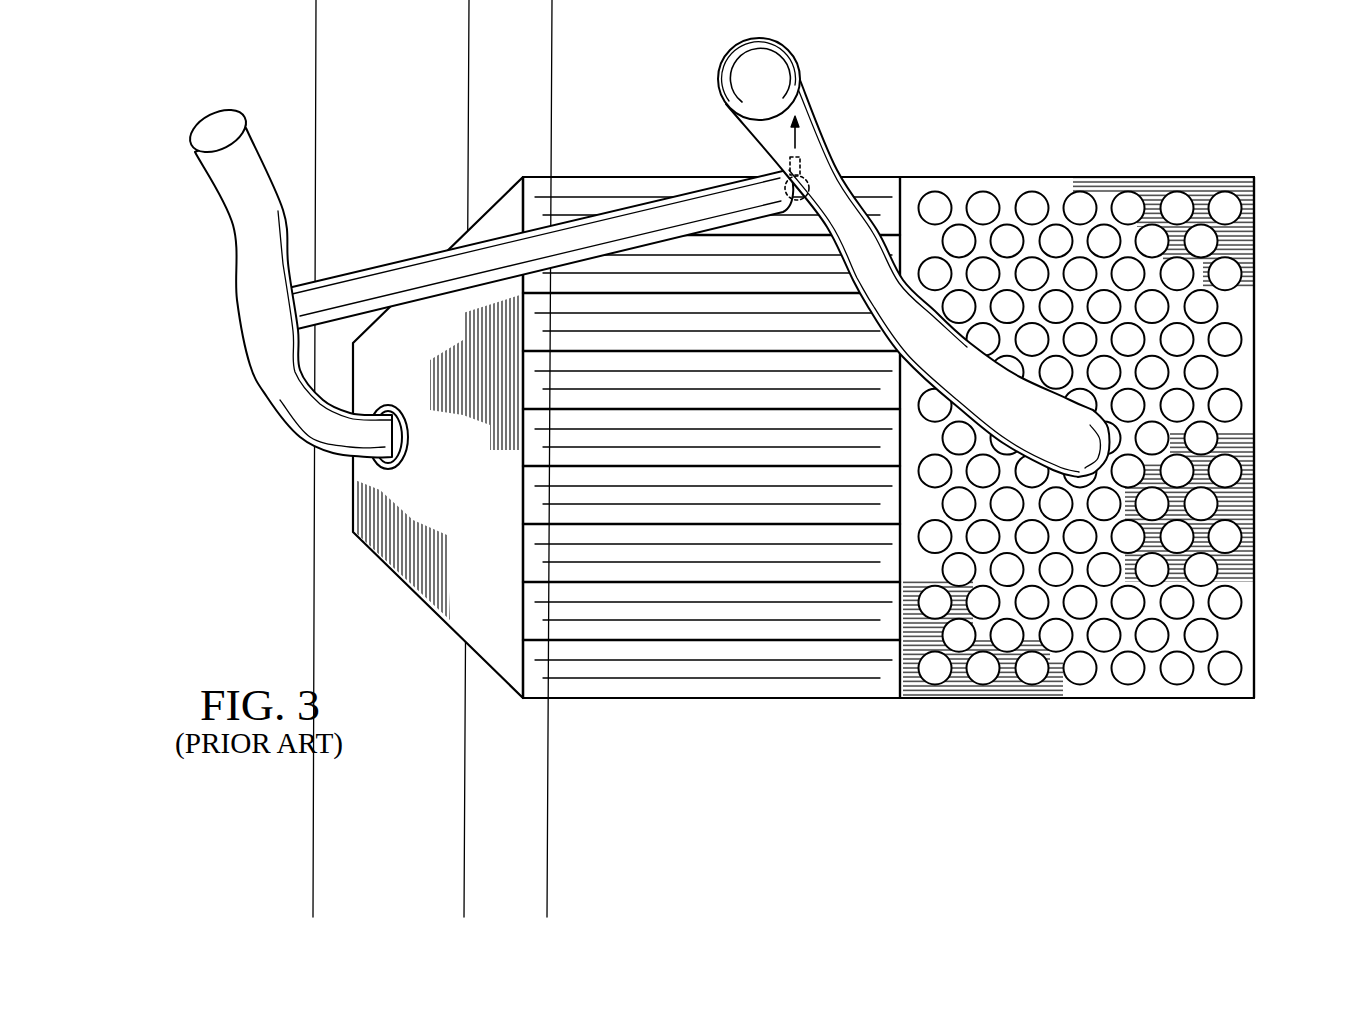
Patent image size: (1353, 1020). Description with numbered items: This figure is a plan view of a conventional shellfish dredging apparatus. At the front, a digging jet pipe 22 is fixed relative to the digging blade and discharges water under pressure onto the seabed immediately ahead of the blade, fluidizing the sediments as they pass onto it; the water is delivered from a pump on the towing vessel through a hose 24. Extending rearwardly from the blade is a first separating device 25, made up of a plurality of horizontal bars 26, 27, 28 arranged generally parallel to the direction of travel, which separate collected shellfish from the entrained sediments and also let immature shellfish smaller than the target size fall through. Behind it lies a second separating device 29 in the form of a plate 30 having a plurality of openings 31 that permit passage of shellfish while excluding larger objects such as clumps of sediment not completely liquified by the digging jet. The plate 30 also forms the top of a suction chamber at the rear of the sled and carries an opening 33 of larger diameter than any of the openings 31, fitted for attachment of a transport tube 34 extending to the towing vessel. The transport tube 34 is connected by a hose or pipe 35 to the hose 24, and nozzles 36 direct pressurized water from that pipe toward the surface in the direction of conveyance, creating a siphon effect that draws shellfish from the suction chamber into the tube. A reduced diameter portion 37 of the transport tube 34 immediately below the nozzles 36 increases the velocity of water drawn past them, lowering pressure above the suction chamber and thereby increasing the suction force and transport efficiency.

The digging jet pipe 22 is at (388, 405).
The hose 24 is at (252, 167).
The first separating device 25 is at (810, 668).
The horizontal bar 26 is at (578, 587).
The horizontal bar 27 is at (667, 603).
The horizontal bar 28 is at (738, 623).
The second separating device 29 is at (1344, 432).
The plate 30 is at (1235, 628).
The openings 31 is at (1098, 640).
The opening 33 is at (1113, 453).
The transport tube 34 is at (807, 98).
The hose or pipe 35 is at (652, 218).
The nozzles 36 is at (803, 167).
The reduced diameter portion 37 is at (830, 222).